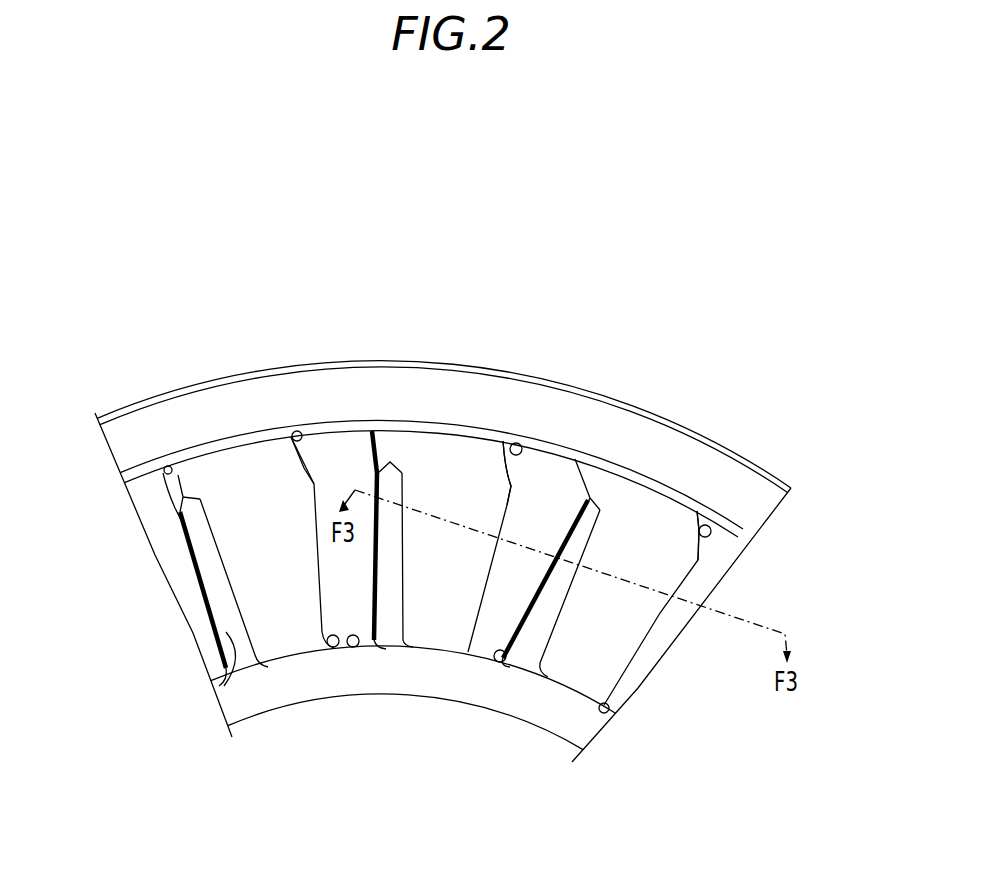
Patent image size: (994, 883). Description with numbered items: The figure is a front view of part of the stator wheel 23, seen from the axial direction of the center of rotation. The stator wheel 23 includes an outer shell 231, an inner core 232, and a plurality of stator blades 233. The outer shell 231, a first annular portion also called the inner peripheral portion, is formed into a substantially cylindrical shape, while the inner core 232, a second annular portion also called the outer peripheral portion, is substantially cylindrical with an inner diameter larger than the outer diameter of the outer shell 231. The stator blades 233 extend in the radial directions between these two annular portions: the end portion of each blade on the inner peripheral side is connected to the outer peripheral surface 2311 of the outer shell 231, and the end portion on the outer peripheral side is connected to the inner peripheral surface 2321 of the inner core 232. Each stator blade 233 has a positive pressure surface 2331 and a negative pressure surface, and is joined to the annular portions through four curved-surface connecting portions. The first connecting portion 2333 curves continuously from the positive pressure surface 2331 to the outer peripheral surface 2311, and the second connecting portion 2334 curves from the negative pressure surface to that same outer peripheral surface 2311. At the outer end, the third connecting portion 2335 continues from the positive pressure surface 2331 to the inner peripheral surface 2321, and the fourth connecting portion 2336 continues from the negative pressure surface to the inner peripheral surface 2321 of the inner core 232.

The stator wheel 23 is at (727, 385).
The outer shell 231 is at (557, 735).
The inner core 232 is at (503, 386).
The stator blades 233 is at (240, 462).
The outer peripheral surface 2311 is at (226, 632).
The inner peripheral surface 2321 is at (185, 515).
The positive pressure surface 2331 is at (283, 637).
The first connecting portion 2333 is at (338, 652).
The second connecting portion 2334 is at (220, 673).
The third connecting portion 2335 is at (303, 440).
The fourth connecting portion 2336 is at (374, 436).